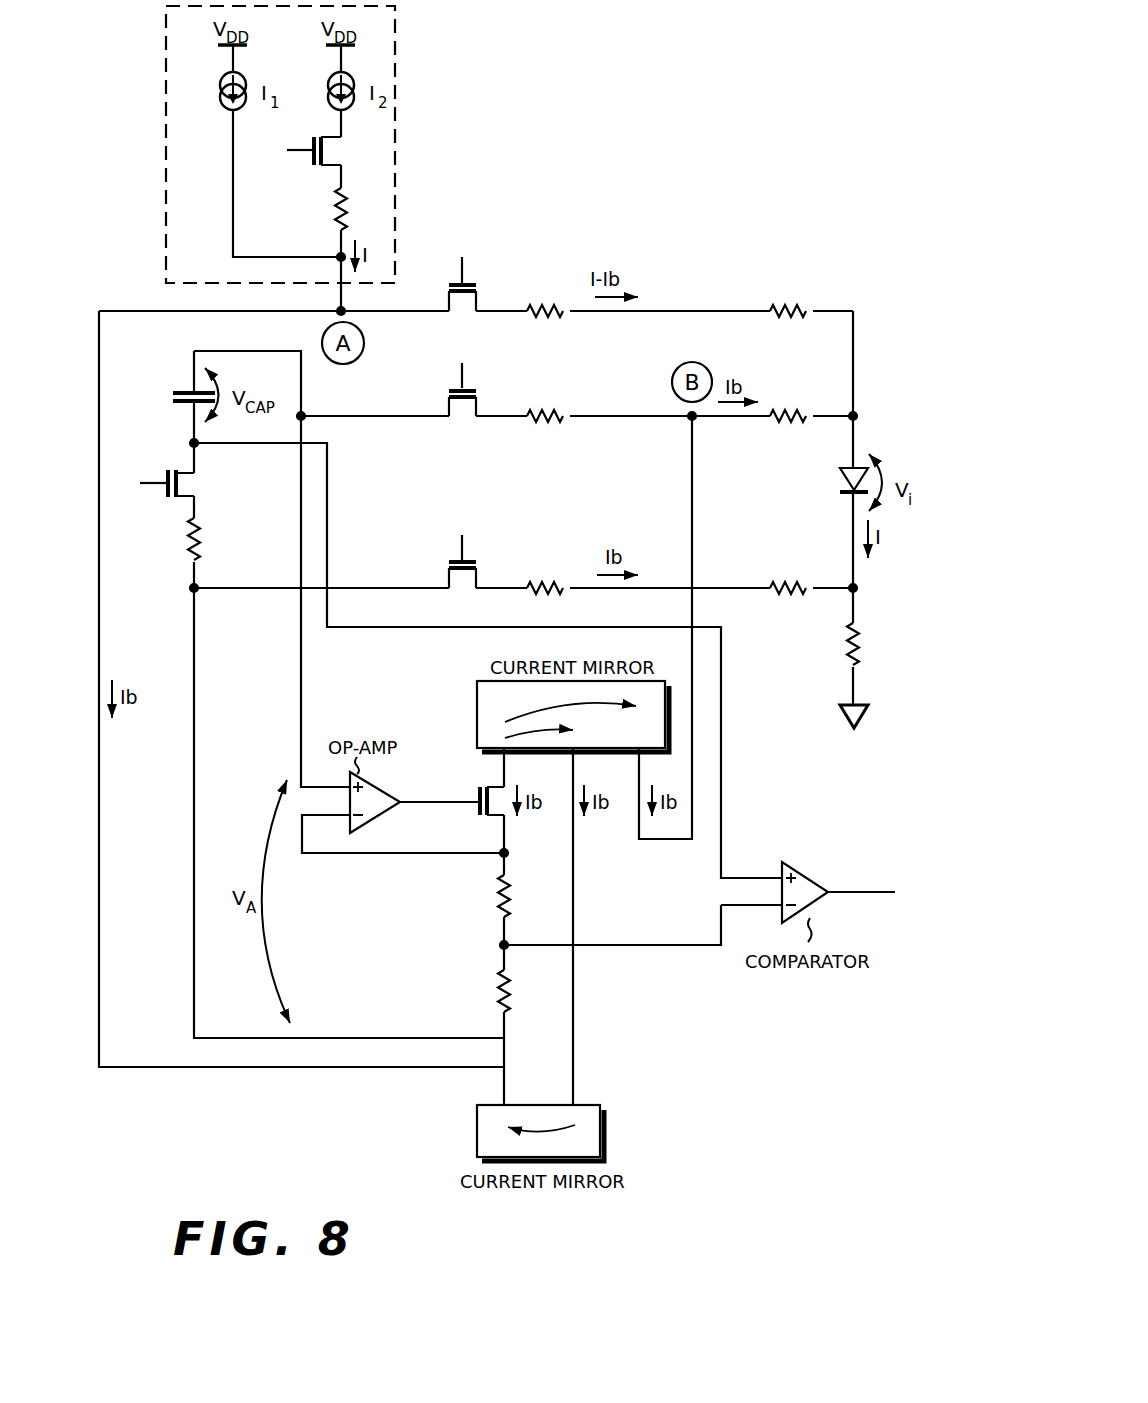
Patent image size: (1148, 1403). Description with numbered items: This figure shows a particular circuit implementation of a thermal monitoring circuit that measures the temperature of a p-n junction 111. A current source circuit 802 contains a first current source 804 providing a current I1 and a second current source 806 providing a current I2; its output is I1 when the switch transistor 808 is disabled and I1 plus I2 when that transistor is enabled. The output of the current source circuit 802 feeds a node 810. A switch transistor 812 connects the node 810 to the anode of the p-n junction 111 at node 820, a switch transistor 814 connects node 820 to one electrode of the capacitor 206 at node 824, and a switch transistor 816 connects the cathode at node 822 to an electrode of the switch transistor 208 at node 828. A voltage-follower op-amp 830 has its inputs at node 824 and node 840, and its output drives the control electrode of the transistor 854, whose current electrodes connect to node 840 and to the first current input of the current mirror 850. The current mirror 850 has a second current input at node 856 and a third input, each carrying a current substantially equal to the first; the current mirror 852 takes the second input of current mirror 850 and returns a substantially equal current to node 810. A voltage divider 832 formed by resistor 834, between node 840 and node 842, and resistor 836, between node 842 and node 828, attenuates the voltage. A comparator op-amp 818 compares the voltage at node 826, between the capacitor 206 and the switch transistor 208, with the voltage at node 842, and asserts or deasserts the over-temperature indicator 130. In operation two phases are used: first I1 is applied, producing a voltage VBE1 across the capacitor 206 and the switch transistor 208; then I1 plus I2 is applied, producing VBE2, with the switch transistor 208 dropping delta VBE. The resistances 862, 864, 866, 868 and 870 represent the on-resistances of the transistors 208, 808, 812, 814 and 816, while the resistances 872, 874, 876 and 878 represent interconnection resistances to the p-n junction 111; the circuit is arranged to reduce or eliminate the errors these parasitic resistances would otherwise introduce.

The current source circuit 802 is at (396, 52).
The first current source 804 is at (222, 75).
The second current source 806 is at (330, 75).
The switch transistor 808 is at (333, 150).
The resistance 864 is at (334, 216).
The node 810 is at (328, 313).
The switch transistor 812 is at (474, 284).
The switch transistor 814 is at (462, 402).
The switch transistor 816 is at (462, 573).
The resistance 866 is at (553, 318).
The resistance 868 is at (553, 423).
The resistance 870 is at (543, 582).
The resistance 872 is at (790, 307).
The resistance 874 is at (790, 414).
The resistance 876 is at (790, 583).
The resistance 878 is at (845, 638).
The node 856 is at (688, 417).
The node 820 is at (858, 418).
The node 822 is at (860, 592).
The p-n junction 111 is at (840, 482).
The capacitor 206 is at (179, 388).
The node 824 is at (304, 412).
The node 826 is at (192, 442).
The switch transistor 208 is at (186, 490).
The resistance 862 is at (188, 538).
The node 828 is at (192, 588).
The voltage-follower op-amp 830 is at (377, 782).
The transistor 854 is at (479, 822).
The current mirror 850 is at (477, 708).
The node 840 is at (508, 852).
The voltage divider 832 is at (464, 947).
The resistor 834 is at (511, 892).
The node 842 is at (503, 945).
The resistor 836 is at (511, 988).
The current mirror 852 is at (477, 1129).
The comparator op-amp 818 is at (800, 872).
The over-temperature indicator 130 is at (866, 894).